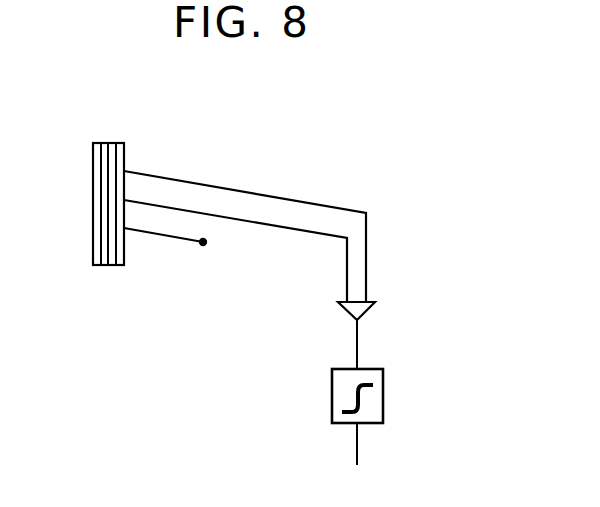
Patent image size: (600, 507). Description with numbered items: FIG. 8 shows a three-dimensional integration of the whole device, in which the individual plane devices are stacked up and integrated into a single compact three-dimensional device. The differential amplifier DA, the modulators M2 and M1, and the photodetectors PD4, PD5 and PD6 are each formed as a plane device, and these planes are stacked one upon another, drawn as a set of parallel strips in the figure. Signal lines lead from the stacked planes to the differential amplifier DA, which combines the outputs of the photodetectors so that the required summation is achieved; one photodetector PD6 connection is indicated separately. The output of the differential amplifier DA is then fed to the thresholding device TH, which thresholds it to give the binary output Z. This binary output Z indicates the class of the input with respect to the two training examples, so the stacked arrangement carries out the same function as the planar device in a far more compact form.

The differential amplifier DA is at (97, 143).
The modulator M1 is at (104, 143).
The modulator M2 is at (112, 143).
The photodetector PD4 is at (121, 143).
The photodetector PD5 is at (235, 251).
The photodetector PD6 is at (180, 253).
The thresholding device TH is at (332, 398).
The binary output Z is at (371, 454).